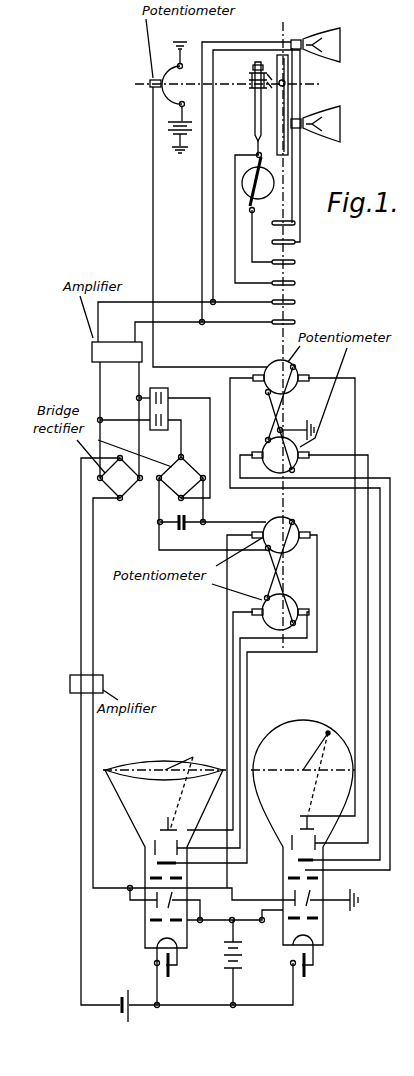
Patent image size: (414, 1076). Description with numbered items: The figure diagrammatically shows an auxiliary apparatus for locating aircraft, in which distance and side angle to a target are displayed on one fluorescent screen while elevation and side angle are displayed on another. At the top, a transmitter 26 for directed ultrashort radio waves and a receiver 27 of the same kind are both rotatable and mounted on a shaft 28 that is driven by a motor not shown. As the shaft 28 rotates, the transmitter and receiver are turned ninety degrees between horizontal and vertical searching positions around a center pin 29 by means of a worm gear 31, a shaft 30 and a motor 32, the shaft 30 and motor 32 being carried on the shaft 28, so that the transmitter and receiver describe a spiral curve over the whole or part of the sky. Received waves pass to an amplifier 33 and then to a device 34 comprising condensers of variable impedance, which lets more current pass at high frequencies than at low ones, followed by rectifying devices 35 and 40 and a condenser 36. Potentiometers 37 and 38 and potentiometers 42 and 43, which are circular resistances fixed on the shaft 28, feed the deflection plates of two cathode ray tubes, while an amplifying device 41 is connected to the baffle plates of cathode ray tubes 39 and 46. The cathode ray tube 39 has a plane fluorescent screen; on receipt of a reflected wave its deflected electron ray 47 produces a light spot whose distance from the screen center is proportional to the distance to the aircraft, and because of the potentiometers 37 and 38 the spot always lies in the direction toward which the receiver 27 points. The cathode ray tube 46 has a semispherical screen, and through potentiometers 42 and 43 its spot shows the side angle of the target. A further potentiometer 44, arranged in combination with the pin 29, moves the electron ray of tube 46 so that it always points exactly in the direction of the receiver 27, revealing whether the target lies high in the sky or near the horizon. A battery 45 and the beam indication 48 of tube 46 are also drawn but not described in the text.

The transmitter 26 is at (315, 124).
The receiver 27 is at (315, 45).
The shaft 28 is at (292, 44).
The center pin 29 is at (287, 86).
The shaft 30 is at (254, 106).
The worm gear 31 is at (249, 73).
The motor 32 is at (258, 183).
The amplifier 33 is at (117, 352).
The device comprising condensers of variable impedance 34 is at (168, 399).
The rectifying device 35 is at (181, 478).
The condenser 36 is at (185, 534).
The potentiometer 37 is at (295, 527).
The potentiometer 38 is at (298, 607).
The cathode ray tube 39 is at (205, 761).
The rectifying device 40 is at (120, 478).
The amplifying device 41 is at (104, 680).
The potentiometer 42 is at (300, 373).
The potentiometer 43 is at (266, 447).
The potentiometer 44 is at (168, 74).
The battery 45 is at (168, 134).
The cathode ray tube 46 is at (337, 729).
The deflected electron ray 47 is at (178, 815).
The electron beam 48 is at (314, 803).